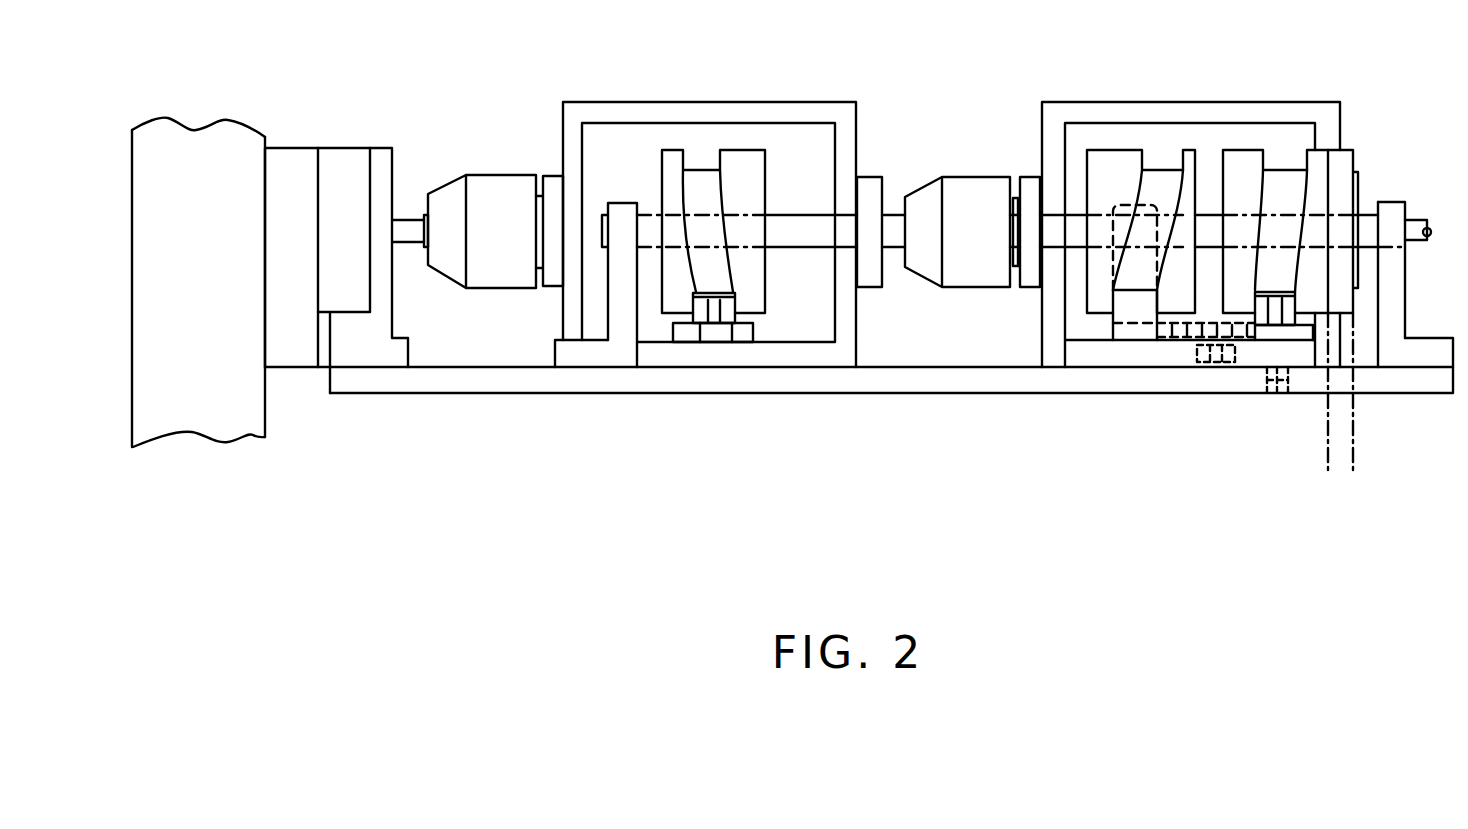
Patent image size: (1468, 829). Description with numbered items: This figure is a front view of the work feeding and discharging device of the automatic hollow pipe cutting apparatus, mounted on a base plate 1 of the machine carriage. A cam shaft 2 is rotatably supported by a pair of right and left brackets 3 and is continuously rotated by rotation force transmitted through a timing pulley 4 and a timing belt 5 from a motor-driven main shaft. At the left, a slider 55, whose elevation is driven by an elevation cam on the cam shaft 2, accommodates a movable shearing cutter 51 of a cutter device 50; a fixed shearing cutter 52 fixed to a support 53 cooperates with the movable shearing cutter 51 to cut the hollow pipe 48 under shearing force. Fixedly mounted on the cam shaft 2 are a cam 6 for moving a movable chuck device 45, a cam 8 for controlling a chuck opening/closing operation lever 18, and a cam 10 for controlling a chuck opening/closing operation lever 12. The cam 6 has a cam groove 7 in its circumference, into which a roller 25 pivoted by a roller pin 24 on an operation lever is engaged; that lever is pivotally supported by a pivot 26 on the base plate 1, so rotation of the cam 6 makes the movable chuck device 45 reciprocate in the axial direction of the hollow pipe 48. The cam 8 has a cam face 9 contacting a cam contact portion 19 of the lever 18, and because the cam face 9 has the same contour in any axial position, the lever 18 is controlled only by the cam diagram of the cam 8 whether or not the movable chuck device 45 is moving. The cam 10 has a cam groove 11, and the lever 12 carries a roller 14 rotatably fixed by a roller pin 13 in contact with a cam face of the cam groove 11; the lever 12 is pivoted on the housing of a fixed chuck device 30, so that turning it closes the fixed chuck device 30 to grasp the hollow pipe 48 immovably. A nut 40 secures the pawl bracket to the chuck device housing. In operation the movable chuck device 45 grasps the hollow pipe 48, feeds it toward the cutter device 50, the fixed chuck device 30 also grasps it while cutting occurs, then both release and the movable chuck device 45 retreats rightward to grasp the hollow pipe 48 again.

The base plate 1 is at (963, 383).
The cam shaft 2 is at (1405, 203).
The bracket 3 is at (555, 343).
The timing pulley 4 is at (1347, 167).
The timing belt 5 is at (1346, 433).
The cam 6 is at (1243, 150).
The cam groove 7 is at (1283, 168).
The cam 8 is at (1112, 150).
The cam face 9 is at (1177, 202).
The cam 10 is at (740, 167).
The cam groove 11 is at (695, 170).
The chuck opening/closing operation lever 12 is at (685, 335).
The roller pin 13 is at (715, 322).
The roller 14 is at (730, 325).
The chuck opening/closing operation lever 18 is at (1163, 333).
The cam contact portion 19 is at (1125, 333).
The roller pin 24 is at (1282, 332).
The roller 25 is at (1265, 332).
The pivot 26 is at (1277, 363).
The fixed chuck device 30 is at (480, 164).
The nut 40 is at (873, 176).
The movable chuck device 45 is at (971, 166).
The hollow pipe 48 is at (1422, 218).
The cutter device 50 is at (330, 221).
The movable shearing cutter 51 is at (295, 162).
The fixed shearing cutter 52 is at (350, 162).
The support 53 is at (382, 162).
The slider 55 is at (203, 262).